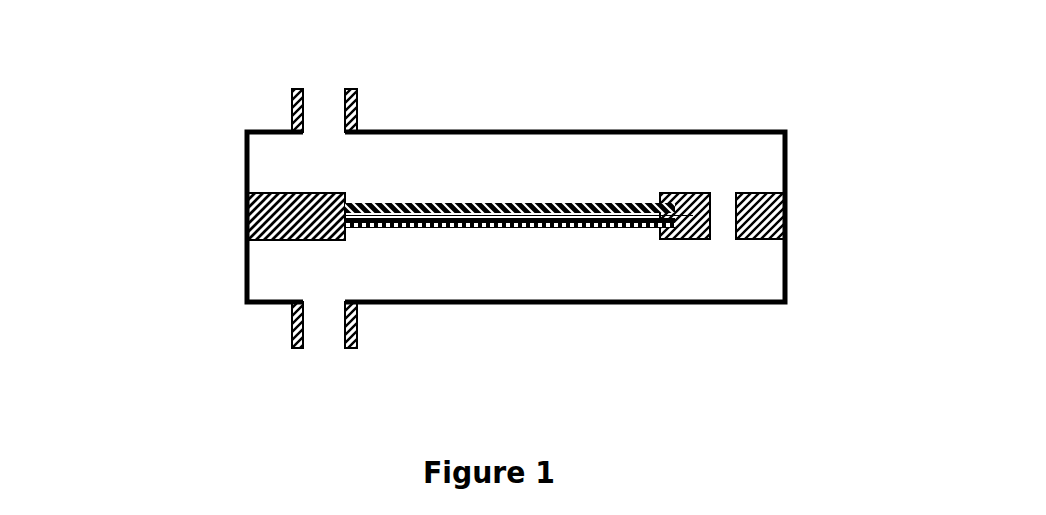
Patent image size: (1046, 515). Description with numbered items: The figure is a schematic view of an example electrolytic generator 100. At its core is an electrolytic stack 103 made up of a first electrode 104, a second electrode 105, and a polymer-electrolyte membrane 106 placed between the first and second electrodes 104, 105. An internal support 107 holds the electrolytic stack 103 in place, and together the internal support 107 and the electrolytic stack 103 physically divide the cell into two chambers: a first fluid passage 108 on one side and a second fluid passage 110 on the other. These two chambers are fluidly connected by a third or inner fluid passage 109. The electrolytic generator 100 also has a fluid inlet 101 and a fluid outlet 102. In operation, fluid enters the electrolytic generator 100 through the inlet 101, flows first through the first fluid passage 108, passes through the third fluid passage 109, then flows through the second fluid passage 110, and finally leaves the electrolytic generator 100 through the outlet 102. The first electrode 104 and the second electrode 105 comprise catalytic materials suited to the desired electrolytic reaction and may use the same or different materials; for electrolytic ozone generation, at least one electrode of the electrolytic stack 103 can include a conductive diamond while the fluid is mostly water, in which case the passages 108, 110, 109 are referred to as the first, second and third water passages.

The electrolytic generator 100 is at (798, 101).
The fluid inlet 101 is at (327, 92).
The fluid outlet 102 is at (327, 341).
The electrolytic stack 103 is at (574, 195).
The first electrode 104 is at (385, 202).
The second electrode 105 is at (394, 229).
The polymer-electrolyte membrane 106 is at (310, 212).
The internal support 107 is at (300, 228).
The first fluid passage 108 is at (473, 184).
The third fluid passage 109 is at (728, 198).
The second fluid passage 110 is at (543, 284).